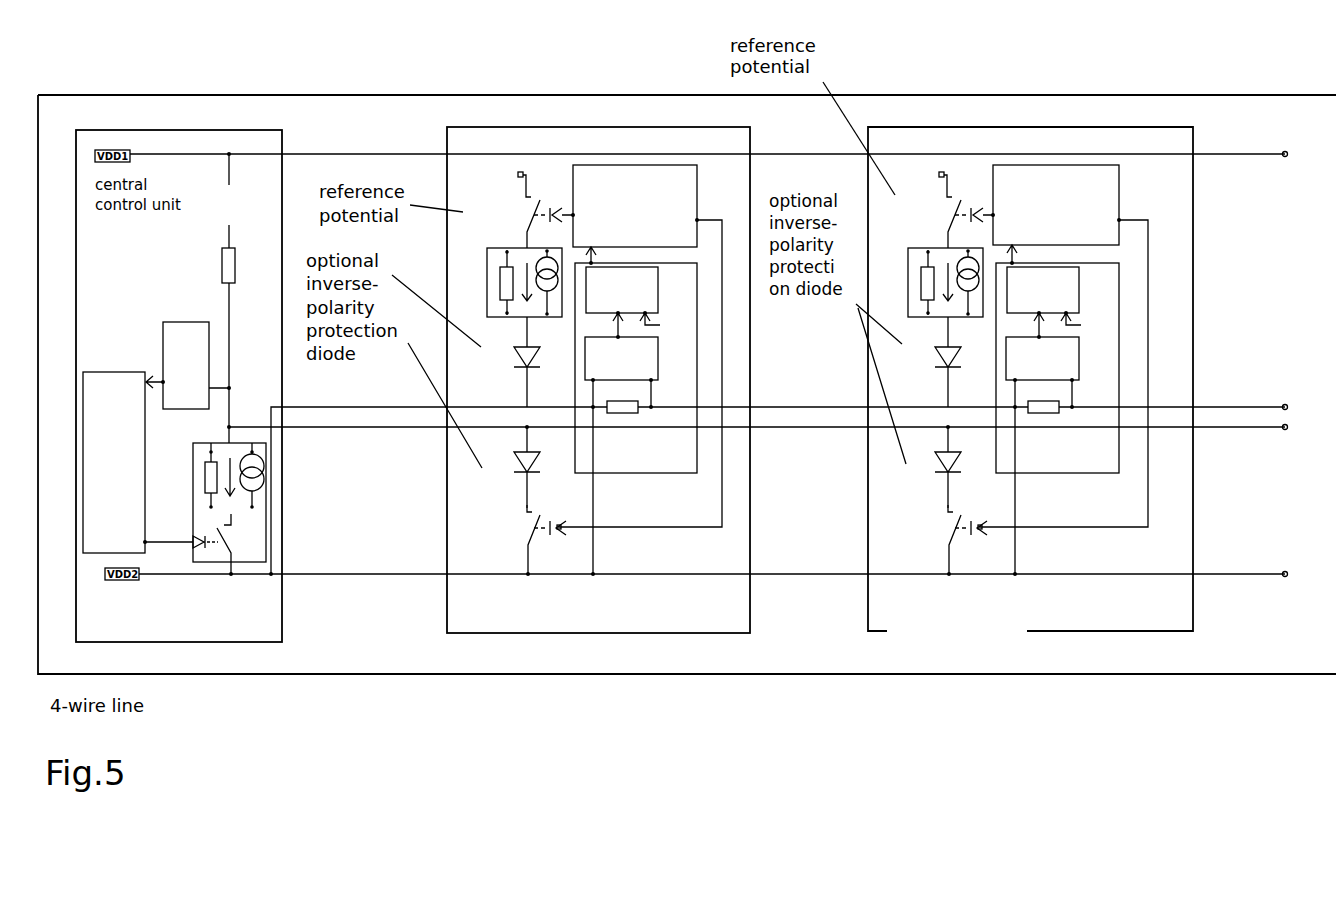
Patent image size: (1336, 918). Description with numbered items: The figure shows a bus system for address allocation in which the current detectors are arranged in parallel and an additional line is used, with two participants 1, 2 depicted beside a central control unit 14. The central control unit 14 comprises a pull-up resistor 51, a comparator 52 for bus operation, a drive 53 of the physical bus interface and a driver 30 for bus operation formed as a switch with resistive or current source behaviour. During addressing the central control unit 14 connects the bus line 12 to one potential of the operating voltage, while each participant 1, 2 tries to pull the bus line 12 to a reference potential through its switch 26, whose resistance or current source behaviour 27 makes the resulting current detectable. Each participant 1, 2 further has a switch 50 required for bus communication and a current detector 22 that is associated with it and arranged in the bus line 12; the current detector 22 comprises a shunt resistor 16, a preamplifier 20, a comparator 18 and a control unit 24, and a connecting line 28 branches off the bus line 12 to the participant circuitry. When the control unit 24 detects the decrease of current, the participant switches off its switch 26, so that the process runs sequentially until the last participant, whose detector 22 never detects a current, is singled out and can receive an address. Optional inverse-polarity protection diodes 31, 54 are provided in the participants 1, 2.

The participant 1 is at (598, 380).
The participant 2 is at (1030, 379).
The bus line 12 is at (710, 364).
The central control unit 14 is at (687, 384).
The shunt resistor 16 is at (830, 458).
The comparator 18 is at (832, 290).
The preamplifier 20 is at (850, 443).
The current detector 22 is at (847, 359).
The control unit 24 is at (847, 206).
The switch 26 is at (729, 210).
The current source behaviour 27 is at (717, 282).
The connecting line 28 is at (779, 472).
The driver for bus operation 30 is at (213, 508).
The inverse-polarity protection diode 31 is at (728, 362).
The switch 50 is at (837, 398).
The pull-up resistor 51 is at (215, 266).
The comparator for bus operation 52 is at (187, 365).
The drive of the physical bus interface 53 is at (138, 462).
The inverse-polarity protection diode 54 is at (728, 466).